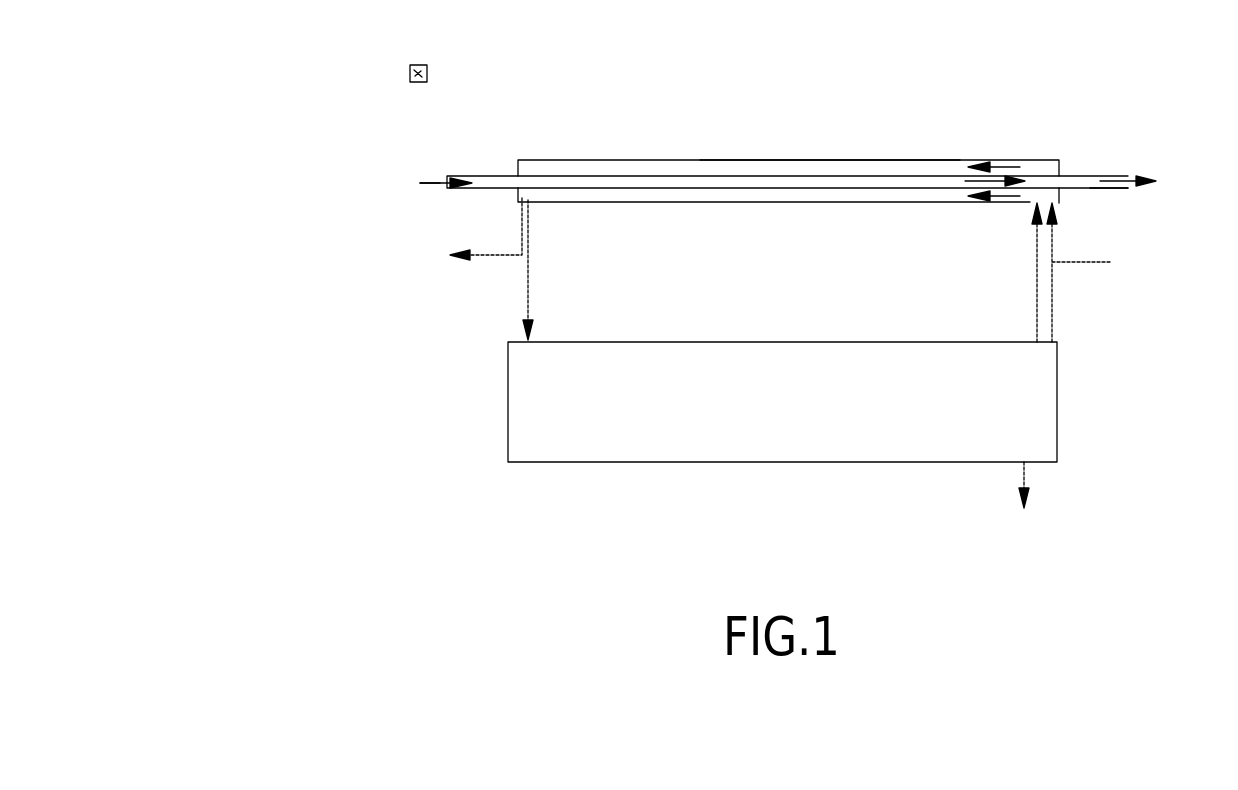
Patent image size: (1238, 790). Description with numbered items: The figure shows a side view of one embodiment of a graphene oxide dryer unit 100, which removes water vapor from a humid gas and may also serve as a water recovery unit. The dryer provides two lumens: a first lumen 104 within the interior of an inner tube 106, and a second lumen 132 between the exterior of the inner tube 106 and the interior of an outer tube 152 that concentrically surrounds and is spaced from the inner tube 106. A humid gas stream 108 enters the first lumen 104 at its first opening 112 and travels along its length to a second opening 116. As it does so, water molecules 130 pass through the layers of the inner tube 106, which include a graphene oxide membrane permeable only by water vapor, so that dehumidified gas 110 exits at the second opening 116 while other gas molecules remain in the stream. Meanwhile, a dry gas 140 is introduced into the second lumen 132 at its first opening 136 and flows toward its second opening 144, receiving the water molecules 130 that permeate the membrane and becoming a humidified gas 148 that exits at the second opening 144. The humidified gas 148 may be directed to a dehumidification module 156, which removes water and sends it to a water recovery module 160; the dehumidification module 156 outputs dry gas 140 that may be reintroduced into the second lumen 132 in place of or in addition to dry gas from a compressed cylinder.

The graphene oxide dryer unit 100 is at (1014, 77).
The first lumen 104 is at (657, 185).
The inner tube 106 is at (722, 162).
The humid gas stream 108 is at (420, 183).
The dehumidified gas 110 is at (1150, 188).
The first opening of the first lumen 112 is at (448, 176).
The second opening of the first lumen 116 is at (1118, 190).
The water molecules 130 is at (427, 70).
The second lumen 132 is at (958, 170).
The first opening of the second lumen 136 is at (1032, 206).
The dry gas 140 is at (1075, 262).
The second opening of the second lumen 144 is at (528, 201).
The humidified gas 148 is at (478, 253).
The outer tube 152 is at (816, 160).
The dehumidification module 156 is at (870, 462).
The water recovery module 160 is at (1030, 478).